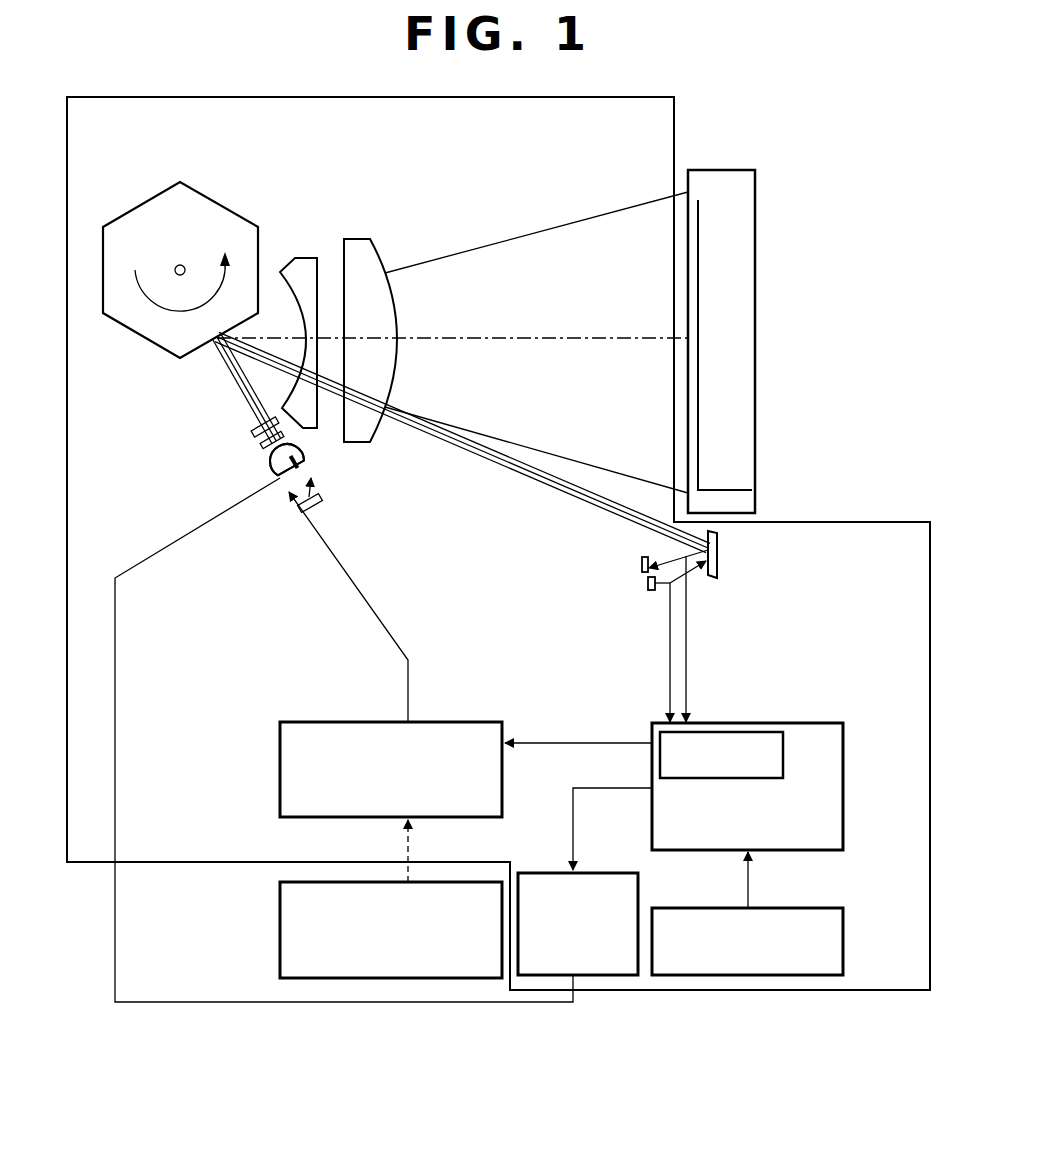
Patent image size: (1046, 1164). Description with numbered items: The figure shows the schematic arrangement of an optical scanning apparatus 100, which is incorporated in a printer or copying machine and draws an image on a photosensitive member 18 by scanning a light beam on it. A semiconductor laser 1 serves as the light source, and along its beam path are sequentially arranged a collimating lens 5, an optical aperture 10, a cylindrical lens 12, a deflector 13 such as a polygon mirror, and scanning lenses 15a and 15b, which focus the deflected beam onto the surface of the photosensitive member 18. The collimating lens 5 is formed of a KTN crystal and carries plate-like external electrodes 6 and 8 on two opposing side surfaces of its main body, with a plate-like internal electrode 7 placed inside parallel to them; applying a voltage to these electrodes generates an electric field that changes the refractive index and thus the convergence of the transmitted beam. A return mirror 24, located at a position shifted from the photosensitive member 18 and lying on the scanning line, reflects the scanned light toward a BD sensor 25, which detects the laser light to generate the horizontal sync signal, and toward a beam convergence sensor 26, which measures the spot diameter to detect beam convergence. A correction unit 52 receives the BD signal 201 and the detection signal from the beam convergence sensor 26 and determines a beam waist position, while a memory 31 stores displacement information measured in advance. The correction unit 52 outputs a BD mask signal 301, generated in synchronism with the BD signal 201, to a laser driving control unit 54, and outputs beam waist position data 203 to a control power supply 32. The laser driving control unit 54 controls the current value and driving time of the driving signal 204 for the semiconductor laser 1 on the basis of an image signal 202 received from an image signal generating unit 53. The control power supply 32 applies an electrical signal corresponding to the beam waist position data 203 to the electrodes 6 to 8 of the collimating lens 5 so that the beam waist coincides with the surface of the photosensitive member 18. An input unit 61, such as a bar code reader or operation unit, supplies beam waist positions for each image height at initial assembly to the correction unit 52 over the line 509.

The optical scanning apparatus 100 is at (676, 122).
The deflector 13 is at (138, 207).
The scanning lens 15a is at (308, 258).
The scanning lens 15b is at (357, 238).
The photosensitive member 18 is at (757, 340).
The cylindrical lens 12 is at (258, 425).
The optical aperture 10 is at (260, 449).
The internal electrode 7 is at (284, 439).
The collimating lens 5 is at (270, 464).
The external electrode 6 is at (278, 480).
The external electrode 8 is at (310, 462).
The semiconductor laser 1 is at (322, 502).
The driving signal 204 is at (409, 612).
The return mirror 24 is at (719, 551).
The beam convergence sensor 26 is at (640, 565).
The BD sensor 25 is at (647, 585).
The BD signal 201 is at (688, 642).
The correction unit 52 is at (845, 767).
The memory 31 is at (785, 740).
The BD mask signal 301 is at (583, 740).
The beam waist position data 203 is at (572, 838).
The control power supply 32 is at (615, 871).
The input unit 61 is at (845, 940).
The input signal line 509 is at (750, 888).
The laser driving control unit 54 is at (280, 768).
The image signal generating unit 53 is at (280, 928).
The image signal 202 is at (405, 848).